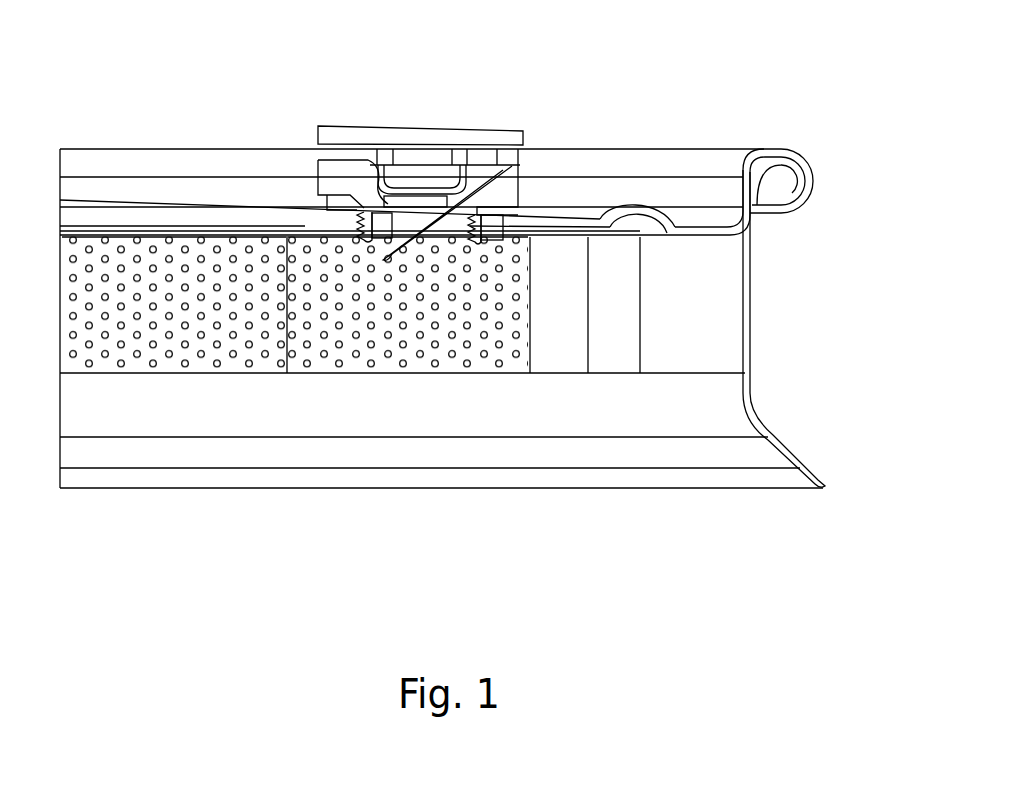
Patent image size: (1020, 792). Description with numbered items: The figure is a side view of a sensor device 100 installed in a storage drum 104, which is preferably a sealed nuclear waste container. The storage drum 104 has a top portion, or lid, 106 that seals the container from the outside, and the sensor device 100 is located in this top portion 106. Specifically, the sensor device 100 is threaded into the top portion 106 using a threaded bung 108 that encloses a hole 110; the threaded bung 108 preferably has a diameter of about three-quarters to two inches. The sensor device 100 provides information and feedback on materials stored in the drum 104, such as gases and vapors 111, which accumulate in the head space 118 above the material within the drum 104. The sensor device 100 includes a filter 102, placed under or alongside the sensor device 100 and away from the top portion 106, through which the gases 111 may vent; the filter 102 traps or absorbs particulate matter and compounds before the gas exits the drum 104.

The sensor device 100 is at (335, 127).
The filter 102 is at (337, 178).
The storage drum 104 is at (755, 381).
The top portion 106 is at (773, 147).
The threaded bung 108 is at (470, 243).
The hole 110 is at (380, 256).
The gases and vapors 111 is at (180, 303).
The head space 118 is at (502, 336).